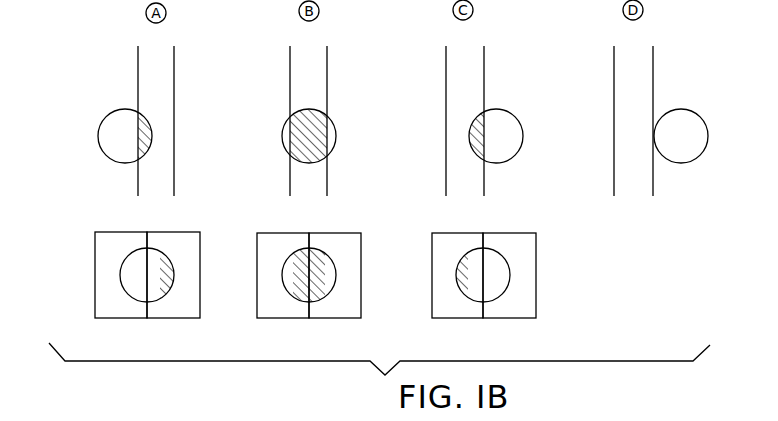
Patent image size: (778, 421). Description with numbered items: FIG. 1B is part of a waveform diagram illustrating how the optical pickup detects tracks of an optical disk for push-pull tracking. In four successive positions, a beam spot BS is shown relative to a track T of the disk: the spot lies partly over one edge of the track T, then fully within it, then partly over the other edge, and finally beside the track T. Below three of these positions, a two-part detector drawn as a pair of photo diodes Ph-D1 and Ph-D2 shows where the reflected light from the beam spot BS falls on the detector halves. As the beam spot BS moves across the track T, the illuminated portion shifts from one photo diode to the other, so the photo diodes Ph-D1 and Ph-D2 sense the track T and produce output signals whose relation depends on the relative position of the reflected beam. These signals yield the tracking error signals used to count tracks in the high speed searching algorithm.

The beam spot BS is at (100, 119).
The track T is at (395, 121).
The photo diode Ph-D1 is at (102, 263).
The photo diode Ph-D2 is at (190, 313).